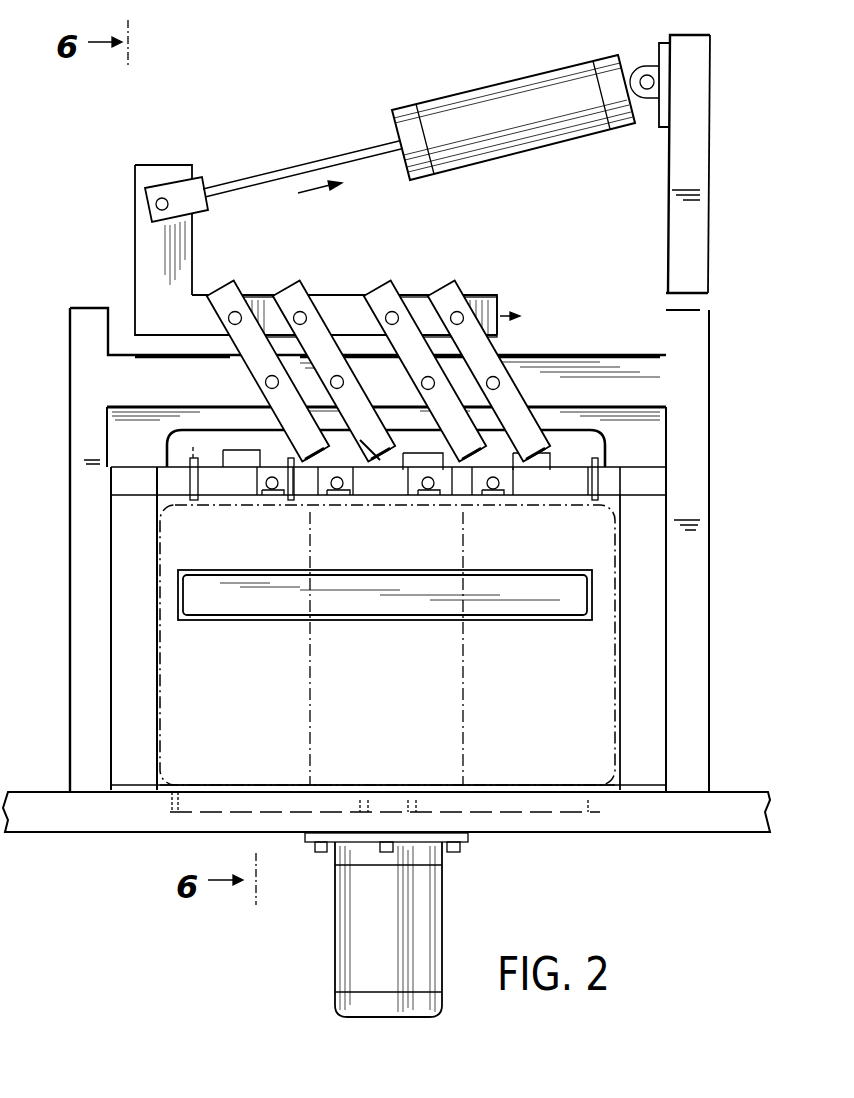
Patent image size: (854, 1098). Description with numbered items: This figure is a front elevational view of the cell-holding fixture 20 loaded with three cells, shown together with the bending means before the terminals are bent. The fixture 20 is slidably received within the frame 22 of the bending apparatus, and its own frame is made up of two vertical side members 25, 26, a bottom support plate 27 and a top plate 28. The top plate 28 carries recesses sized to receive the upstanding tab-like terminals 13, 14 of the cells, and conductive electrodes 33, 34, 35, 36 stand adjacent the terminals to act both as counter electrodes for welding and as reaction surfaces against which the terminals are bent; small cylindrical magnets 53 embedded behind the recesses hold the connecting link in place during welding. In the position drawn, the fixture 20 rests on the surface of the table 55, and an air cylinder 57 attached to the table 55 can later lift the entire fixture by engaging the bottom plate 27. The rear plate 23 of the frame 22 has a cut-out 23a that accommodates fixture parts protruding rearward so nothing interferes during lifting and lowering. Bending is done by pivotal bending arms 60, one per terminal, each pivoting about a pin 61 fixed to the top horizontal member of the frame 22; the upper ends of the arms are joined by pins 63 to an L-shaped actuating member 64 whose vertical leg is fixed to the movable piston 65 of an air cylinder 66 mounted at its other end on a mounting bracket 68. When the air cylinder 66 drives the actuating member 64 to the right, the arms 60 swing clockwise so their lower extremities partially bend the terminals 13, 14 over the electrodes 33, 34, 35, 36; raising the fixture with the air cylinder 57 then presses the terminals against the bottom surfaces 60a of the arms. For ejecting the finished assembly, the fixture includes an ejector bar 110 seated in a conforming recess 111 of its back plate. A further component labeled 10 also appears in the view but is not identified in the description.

The support legs 10 is at (470, 790).
The terminal 13 is at (192, 446).
The terminal 14 is at (590, 462).
The cell-holding fixture 20 is at (630, 766).
The frame 22 is at (673, 589).
The rear plate 23 is at (652, 441).
The cut-out 23a is at (585, 430).
The vertical side member 25 is at (146, 671).
The vertical side member 26 is at (653, 668).
The bottom support plate 27 is at (562, 790).
The top plate 28 is at (652, 494).
The conductive electrode 33 is at (275, 496).
The conductive electrode 34 is at (338, 496).
The conductive electrode 35 is at (432, 496).
The conductive electrode 36 is at (493, 496).
The cylindrical magnet 53 is at (482, 506).
The table 55 is at (746, 822).
The air cylinder 57 is at (345, 924).
The bending arm 60 is at (443, 303).
The bottom surface 60a is at (376, 450).
The pin 61 is at (500, 380).
The pin 63 is at (300, 310).
The L-shaped actuating member 64 is at (490, 300).
The piston 65 is at (250, 180).
The air cylinder 66 is at (480, 80).
The mounting bracket 68 is at (660, 55).
The ejector bar 110 is at (592, 598).
The recess 111 is at (570, 614).